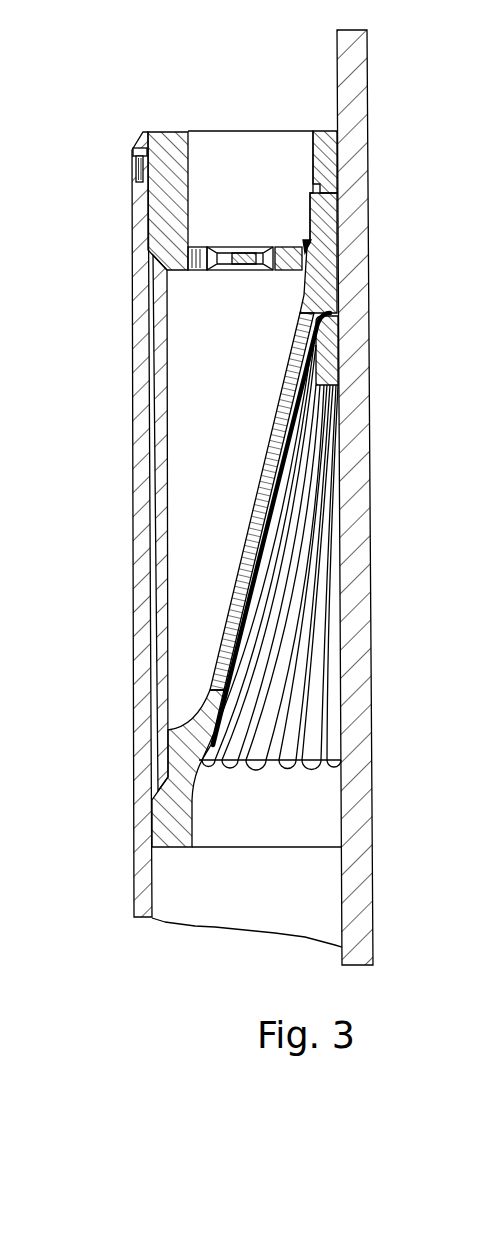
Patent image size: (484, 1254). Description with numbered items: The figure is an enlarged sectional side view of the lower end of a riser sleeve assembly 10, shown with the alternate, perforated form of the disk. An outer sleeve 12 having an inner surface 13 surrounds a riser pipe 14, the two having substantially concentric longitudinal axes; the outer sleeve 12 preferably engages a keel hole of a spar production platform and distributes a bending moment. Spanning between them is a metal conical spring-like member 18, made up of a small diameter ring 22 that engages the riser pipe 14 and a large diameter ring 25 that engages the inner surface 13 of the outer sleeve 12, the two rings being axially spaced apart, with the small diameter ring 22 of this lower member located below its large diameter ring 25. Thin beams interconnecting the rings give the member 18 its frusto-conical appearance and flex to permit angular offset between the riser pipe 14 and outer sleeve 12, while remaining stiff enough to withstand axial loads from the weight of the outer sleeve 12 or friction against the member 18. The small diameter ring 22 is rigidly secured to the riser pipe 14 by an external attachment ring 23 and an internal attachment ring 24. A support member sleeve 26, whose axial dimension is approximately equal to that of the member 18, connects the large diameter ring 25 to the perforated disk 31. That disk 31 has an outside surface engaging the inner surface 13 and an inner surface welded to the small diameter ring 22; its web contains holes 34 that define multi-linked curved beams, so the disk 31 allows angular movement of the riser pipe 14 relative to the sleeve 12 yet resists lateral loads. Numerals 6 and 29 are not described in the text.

The riser sleeve assembly 10 is at (171, 94).
The riser pipe 14 is at (337, 50).
The expansion tool 6 is at (130, 408).
The inner surface 13 is at (158, 362).
The support member sleeve 26 is at (177, 464).
The perforated disk 31 is at (188, 165).
The external attachment ring 23 is at (314, 145).
The holes 34 is at (242, 246).
The small diameter ring 22 is at (305, 290).
The internal attachment ring 24 is at (333, 355).
The conical spring-like member 18 is at (251, 504).
The liner 29 is at (243, 550).
The large diameter ring 25 is at (192, 805).
The outer sleeve 12 is at (135, 883).